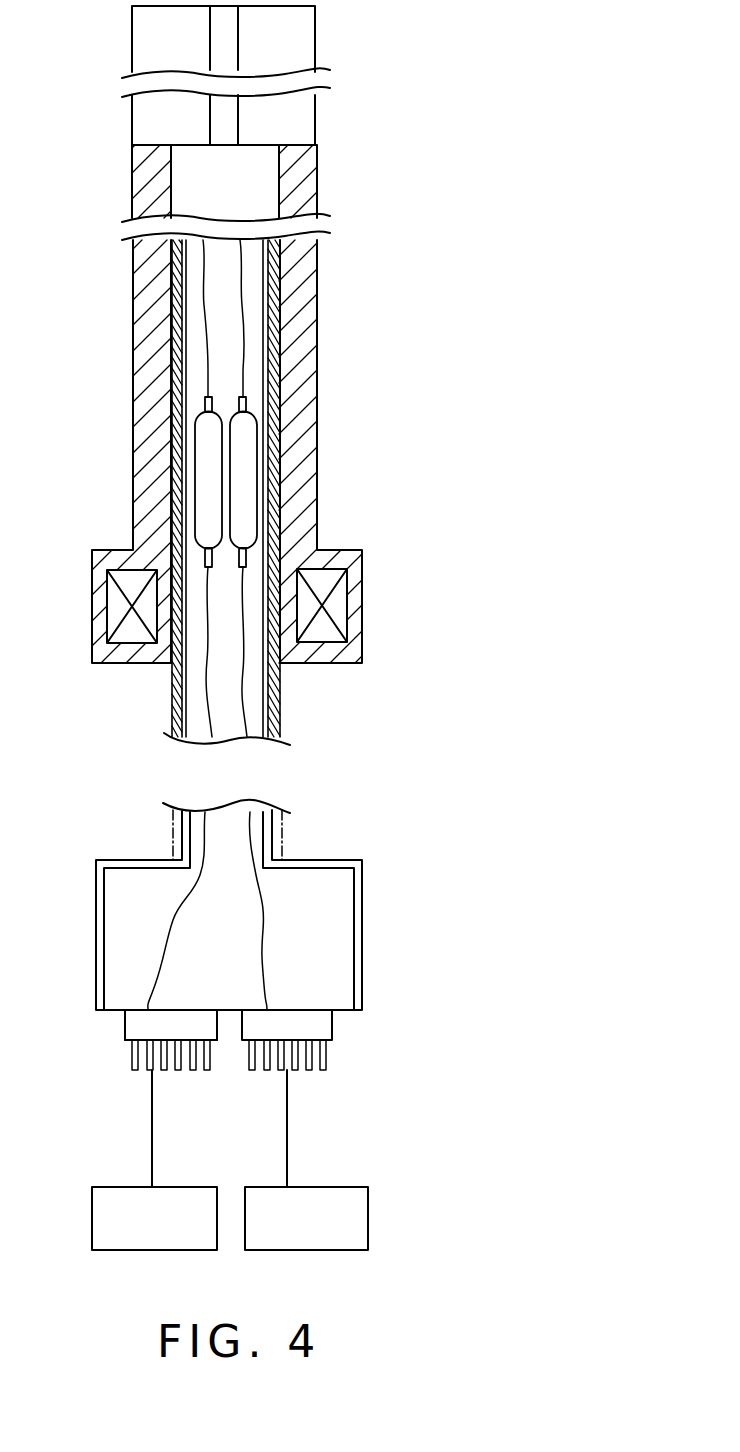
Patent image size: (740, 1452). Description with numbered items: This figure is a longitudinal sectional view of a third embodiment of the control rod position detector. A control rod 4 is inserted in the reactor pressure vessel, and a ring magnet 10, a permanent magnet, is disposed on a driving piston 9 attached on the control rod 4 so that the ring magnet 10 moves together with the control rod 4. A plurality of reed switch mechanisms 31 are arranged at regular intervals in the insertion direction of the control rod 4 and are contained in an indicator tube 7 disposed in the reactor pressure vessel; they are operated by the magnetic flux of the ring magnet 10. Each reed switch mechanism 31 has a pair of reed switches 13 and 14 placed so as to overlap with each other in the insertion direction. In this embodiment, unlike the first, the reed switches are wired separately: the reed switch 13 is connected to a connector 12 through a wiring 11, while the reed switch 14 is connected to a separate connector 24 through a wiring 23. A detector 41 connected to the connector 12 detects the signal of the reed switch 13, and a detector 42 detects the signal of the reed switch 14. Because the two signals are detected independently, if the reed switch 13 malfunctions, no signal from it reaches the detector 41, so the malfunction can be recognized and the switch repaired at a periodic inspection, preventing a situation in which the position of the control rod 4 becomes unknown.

The control rod 4 is at (290, 50).
The driving piston 9 is at (290, 377).
The ring magnet (permanent magnet) 10 is at (335, 608).
The indicator tube 7 is at (277, 688).
The wiring 23 is at (208, 313).
The wiring 11 is at (243, 308).
The reed switch mechanism 31 is at (316, 482).
The reed switch 13 is at (245, 460).
The reed switch 14 is at (210, 520).
The connector 12 is at (318, 1025).
The connector 24 is at (145, 1028).
The detector 42 is at (100, 1216).
The detector 41 is at (362, 1216).